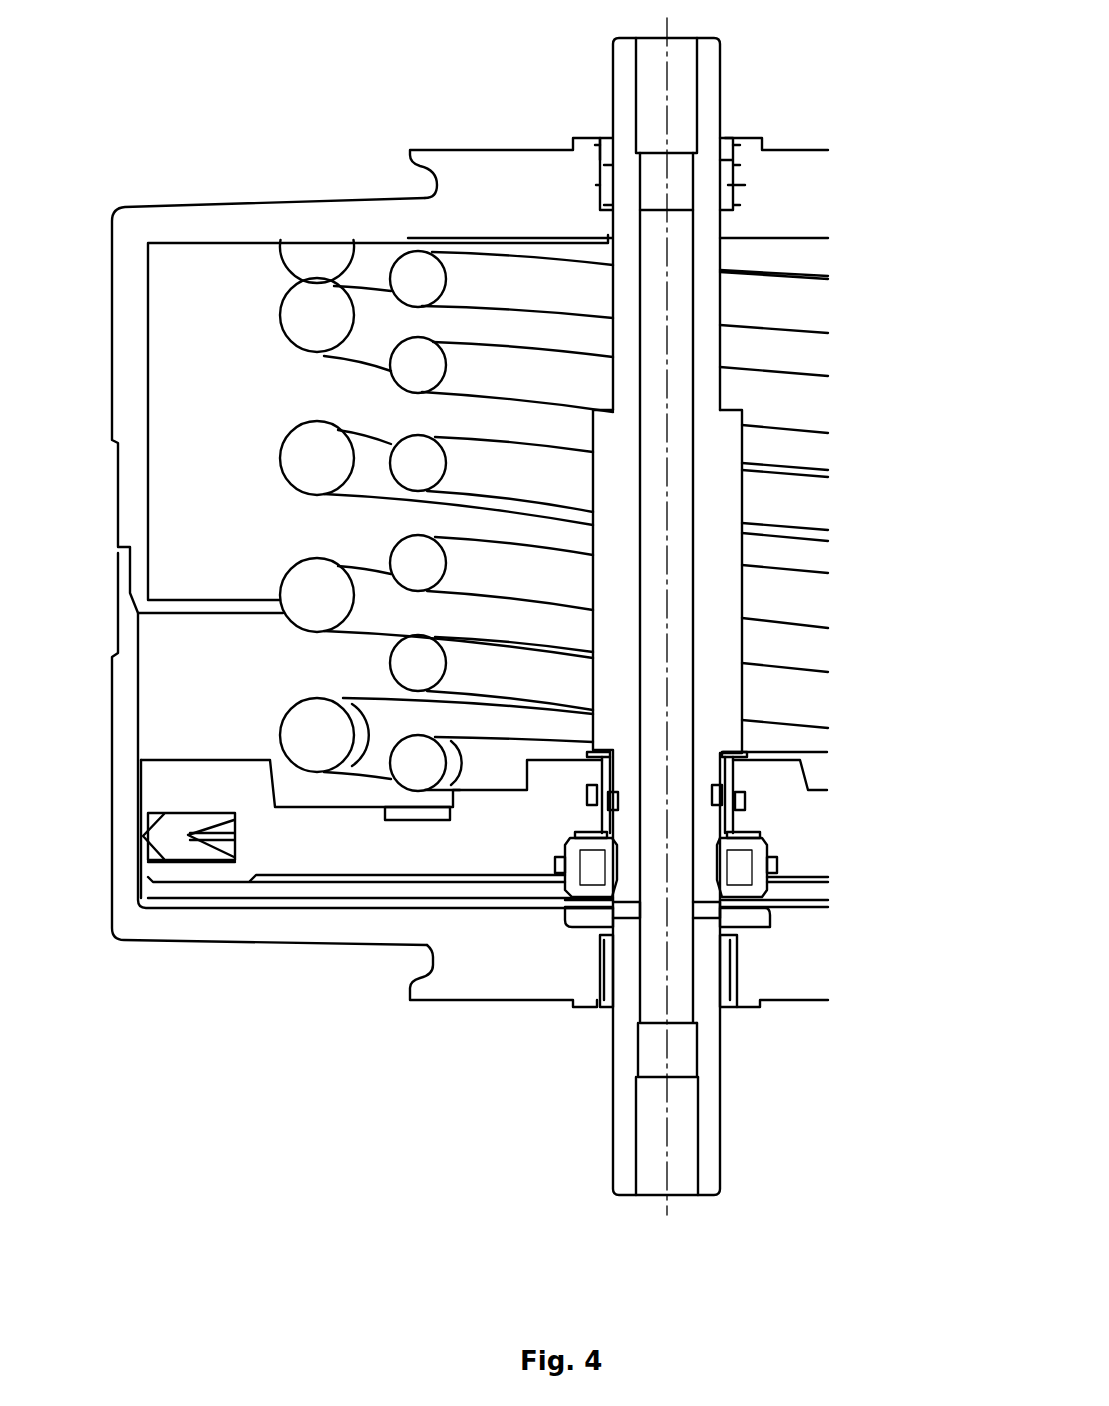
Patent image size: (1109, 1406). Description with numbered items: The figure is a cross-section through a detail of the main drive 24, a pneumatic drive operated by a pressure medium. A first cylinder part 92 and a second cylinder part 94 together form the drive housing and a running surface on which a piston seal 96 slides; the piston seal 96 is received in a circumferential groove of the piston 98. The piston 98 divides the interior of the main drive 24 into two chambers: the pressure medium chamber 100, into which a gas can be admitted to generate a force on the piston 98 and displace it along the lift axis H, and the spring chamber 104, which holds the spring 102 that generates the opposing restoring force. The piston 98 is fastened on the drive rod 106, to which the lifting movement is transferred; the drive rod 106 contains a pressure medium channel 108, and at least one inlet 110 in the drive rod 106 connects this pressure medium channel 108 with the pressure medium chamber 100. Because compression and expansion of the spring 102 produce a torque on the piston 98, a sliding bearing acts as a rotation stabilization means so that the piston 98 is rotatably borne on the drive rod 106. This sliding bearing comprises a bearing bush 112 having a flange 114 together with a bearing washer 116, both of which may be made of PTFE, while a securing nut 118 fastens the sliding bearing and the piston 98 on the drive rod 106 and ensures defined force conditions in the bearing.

The main drive 24 is at (298, 89).
The first cylinder part 92 is at (140, 343).
The second cylinder part 94 is at (125, 717).
The piston seal 96 is at (183, 845).
The piston 98 is at (288, 890).
The pressure medium chamber 100 is at (355, 852).
The spring 102 is at (320, 315).
The spring chamber 104 is at (243, 444).
The drive rod 106 is at (710, 1053).
The pressure medium channel 108 is at (685, 503).
The inlet 110 is at (627, 912).
The bearing bush 112 is at (728, 773).
The flange 114 is at (597, 752).
The bearing washer 116 is at (750, 833).
The securing nut 118 is at (745, 868).
The lift axis H is at (668, 1157).